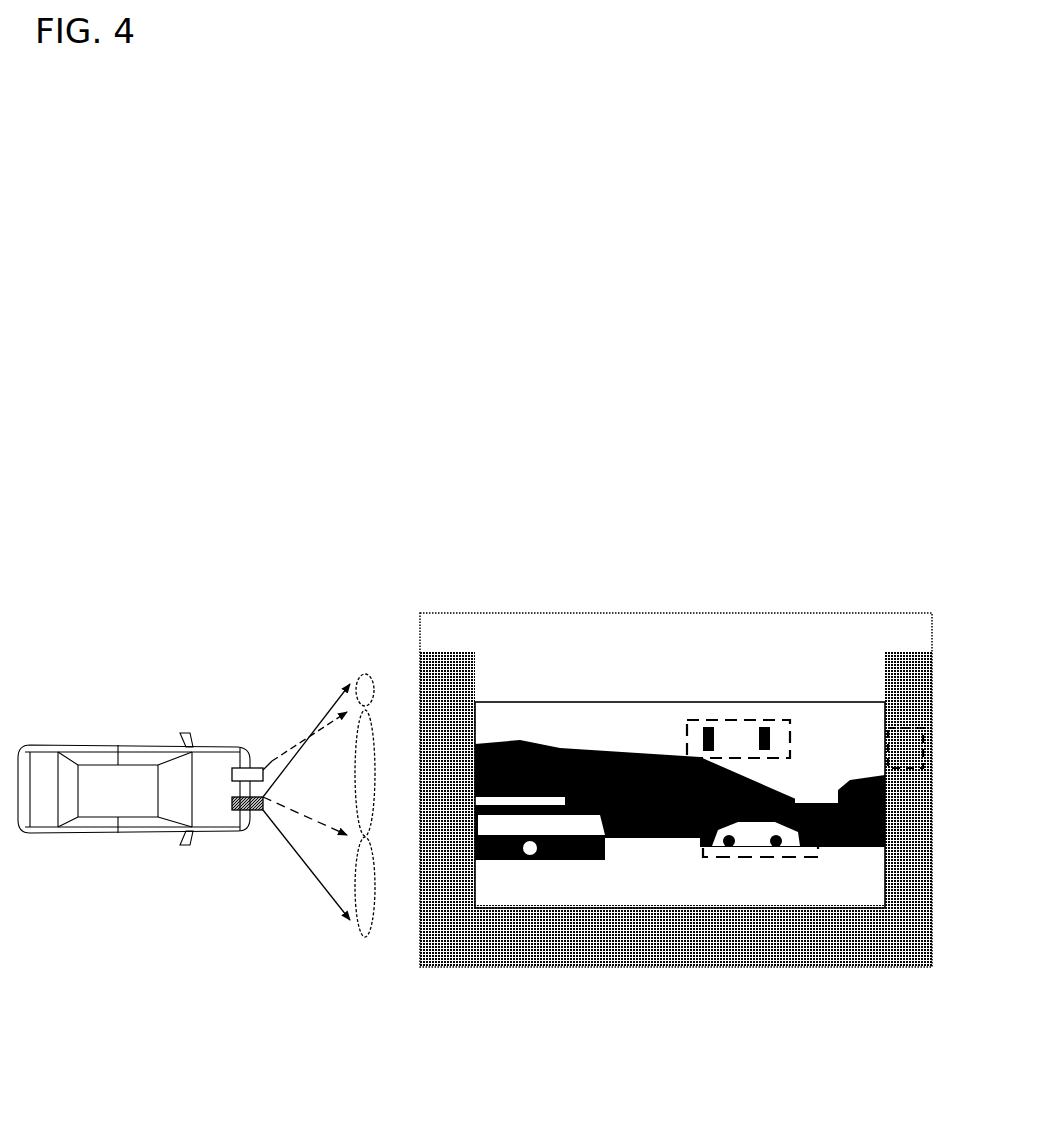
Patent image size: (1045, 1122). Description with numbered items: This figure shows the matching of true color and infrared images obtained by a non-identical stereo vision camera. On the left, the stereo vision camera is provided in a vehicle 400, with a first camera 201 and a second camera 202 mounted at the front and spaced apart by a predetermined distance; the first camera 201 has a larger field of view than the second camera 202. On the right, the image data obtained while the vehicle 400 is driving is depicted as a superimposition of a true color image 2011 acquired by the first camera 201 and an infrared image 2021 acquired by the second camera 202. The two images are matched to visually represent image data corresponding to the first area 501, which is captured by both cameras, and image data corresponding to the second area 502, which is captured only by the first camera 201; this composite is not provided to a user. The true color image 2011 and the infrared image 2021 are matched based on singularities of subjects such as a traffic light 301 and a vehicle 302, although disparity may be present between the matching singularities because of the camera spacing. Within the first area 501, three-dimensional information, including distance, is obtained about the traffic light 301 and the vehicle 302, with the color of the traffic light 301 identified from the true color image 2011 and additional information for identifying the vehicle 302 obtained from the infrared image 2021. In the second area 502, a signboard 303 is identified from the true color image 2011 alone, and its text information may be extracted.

The vehicle 400 is at (120, 720).
The first camera 201 is at (259, 815).
The second camera 202 is at (259, 765).
The second area 502 is at (440, 928).
The first area 501 is at (676, 792).
The true color image 2011 is at (553, 969).
The infrared image 2021 is at (851, 919).
The traffic light 301 is at (757, 718).
The vehicle 302 is at (760, 861).
The signboard 303 is at (908, 727).